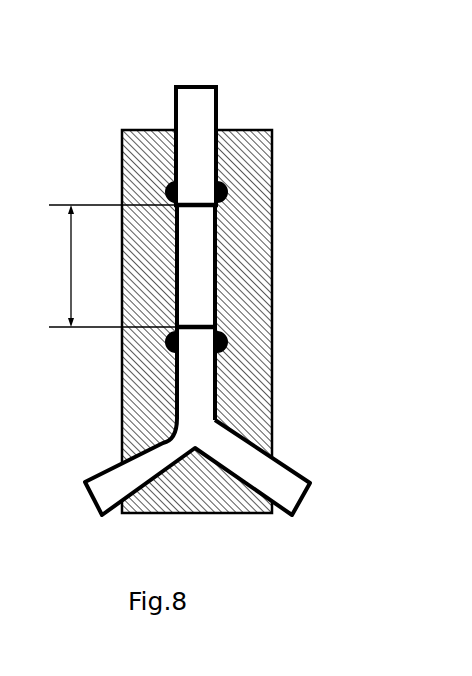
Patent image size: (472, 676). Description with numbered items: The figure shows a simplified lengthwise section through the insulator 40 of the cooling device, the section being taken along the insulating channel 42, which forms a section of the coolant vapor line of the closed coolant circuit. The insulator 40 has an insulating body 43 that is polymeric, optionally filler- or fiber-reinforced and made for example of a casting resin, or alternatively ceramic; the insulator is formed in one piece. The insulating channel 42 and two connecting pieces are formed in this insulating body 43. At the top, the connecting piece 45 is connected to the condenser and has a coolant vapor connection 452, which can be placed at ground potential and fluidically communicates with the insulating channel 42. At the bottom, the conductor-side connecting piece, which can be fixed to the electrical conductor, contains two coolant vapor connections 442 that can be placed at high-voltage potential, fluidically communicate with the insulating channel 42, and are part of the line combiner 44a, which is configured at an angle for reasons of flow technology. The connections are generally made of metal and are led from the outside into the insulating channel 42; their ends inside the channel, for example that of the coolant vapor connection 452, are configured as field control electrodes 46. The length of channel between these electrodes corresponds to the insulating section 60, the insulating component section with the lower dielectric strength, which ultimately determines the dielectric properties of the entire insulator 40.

The insulator 40 is at (209, 301).
The insulating channel 42 is at (202, 288).
The insulating body 43 is at (258, 260).
The connecting piece 45 is at (207, 149).
The coolant vapor connection 452 is at (197, 133).
The field control electrode 46 is at (233, 192).
The coolant vapor connection 442 is at (112, 485).
The line combiner 44a is at (247, 472).
The insulating section 60 is at (70, 262).